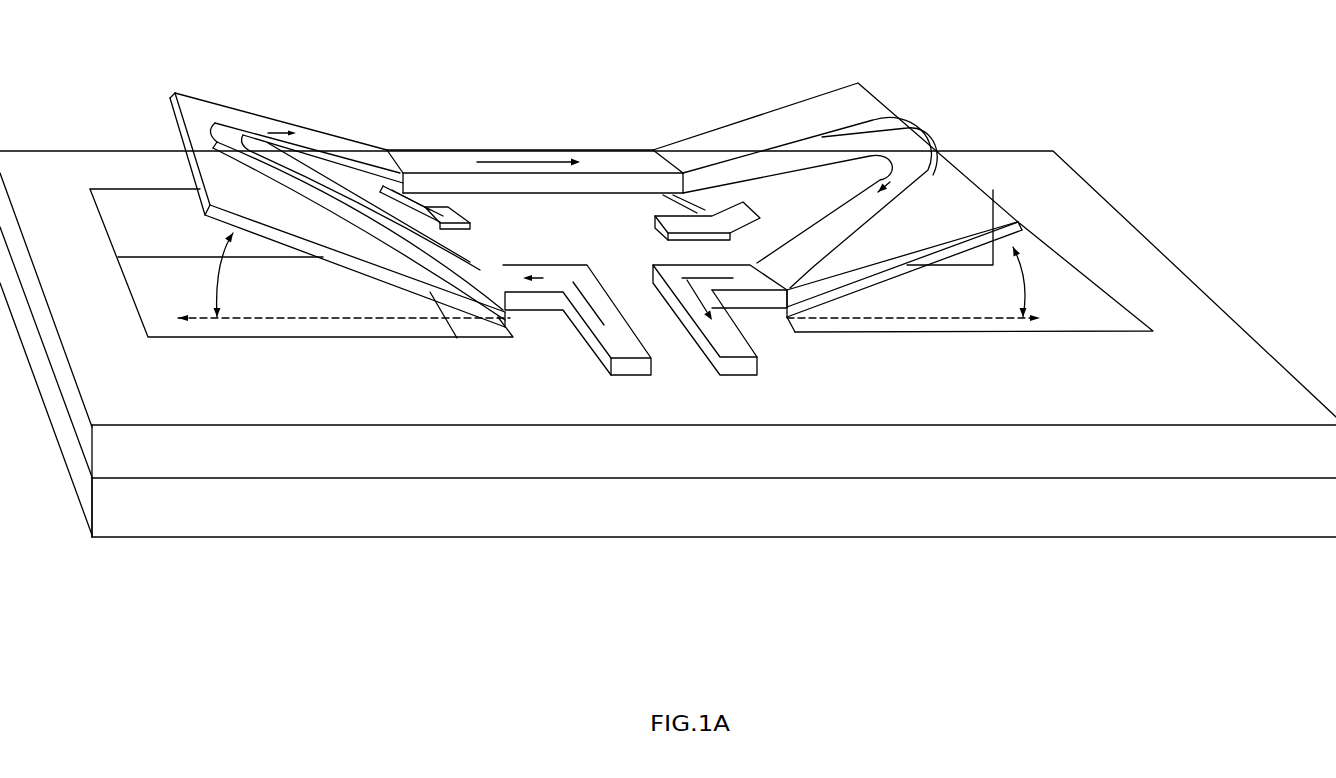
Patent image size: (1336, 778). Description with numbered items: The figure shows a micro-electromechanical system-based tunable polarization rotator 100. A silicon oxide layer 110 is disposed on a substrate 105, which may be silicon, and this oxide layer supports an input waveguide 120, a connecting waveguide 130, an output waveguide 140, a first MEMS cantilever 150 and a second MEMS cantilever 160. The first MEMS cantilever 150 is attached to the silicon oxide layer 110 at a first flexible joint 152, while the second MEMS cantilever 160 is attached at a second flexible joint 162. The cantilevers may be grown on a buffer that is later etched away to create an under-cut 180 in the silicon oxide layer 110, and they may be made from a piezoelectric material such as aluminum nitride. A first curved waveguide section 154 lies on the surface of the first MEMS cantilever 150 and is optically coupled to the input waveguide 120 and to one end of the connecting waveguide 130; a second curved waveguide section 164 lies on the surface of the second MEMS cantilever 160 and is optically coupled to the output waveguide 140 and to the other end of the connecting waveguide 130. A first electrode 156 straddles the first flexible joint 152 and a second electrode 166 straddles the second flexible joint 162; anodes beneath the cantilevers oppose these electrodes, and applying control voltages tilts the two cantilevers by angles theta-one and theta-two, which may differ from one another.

The MEMS-based tunable polarization rotator 100 is at (972, 585).
The substrate 105 is at (367, 523).
The silicon oxide layer 110 is at (365, 442).
The input waveguide 120 is at (628, 312).
The connecting waveguide 130 is at (500, 182).
The output waveguide 140 is at (703, 358).
The first MEMS cantilever 150 is at (192, 98).
The first flexible joint 152 is at (472, 245).
The first curved waveguide section 154 is at (307, 138).
The first electrode 156 is at (443, 212).
The second MEMS cantilever 160 is at (831, 105).
The second flexible joint 162 is at (696, 200).
The second curved waveguide section 164 is at (780, 143).
The second electrode 166 is at (658, 200).
The under-cut 180 is at (126, 197).